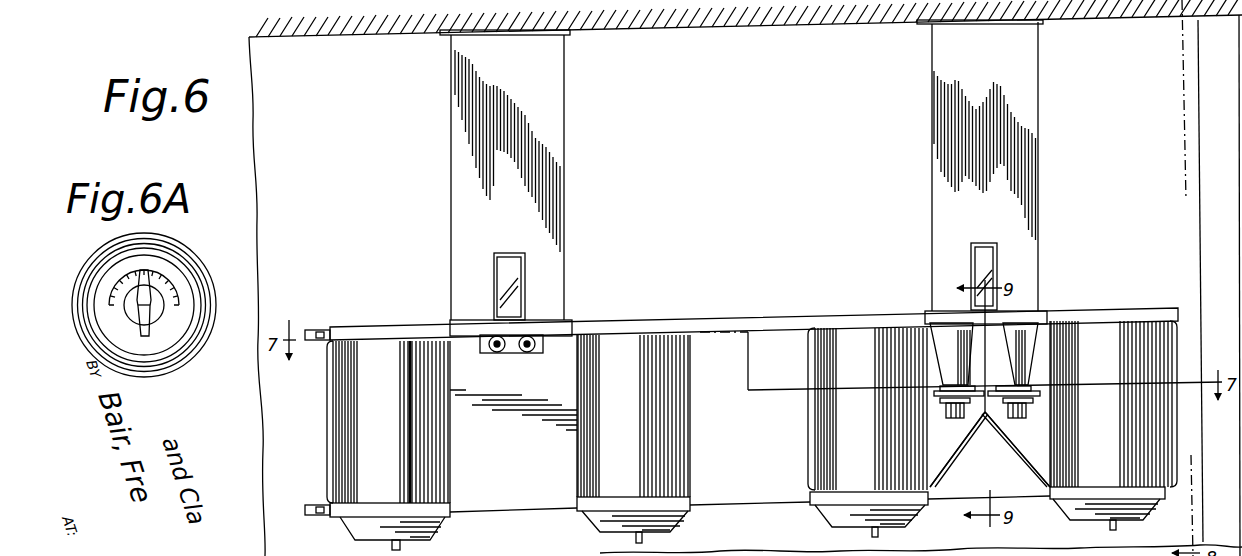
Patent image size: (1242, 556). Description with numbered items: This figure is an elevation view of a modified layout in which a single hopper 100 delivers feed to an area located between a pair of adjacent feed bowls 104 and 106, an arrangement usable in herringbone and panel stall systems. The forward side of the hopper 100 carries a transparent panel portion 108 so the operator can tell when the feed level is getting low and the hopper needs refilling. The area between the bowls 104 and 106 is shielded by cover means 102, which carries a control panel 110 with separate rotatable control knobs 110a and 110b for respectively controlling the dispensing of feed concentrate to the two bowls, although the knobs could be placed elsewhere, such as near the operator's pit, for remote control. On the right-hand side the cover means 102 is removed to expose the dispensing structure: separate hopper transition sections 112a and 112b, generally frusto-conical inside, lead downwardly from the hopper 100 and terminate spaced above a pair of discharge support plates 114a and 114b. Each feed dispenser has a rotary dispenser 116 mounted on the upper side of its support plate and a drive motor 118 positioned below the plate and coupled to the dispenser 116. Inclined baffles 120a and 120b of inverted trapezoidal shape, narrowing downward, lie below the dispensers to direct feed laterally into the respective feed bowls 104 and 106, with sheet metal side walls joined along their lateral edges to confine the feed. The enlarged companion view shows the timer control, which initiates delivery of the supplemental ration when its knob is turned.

In FIG. 6, the hopper 100 is at (568, 200).
In FIG. 6, the cover means 102 is at (530, 436).
In FIG. 6, the feed bowl 104 is at (360, 532).
In FIG. 6, the feed bowl 106 is at (598, 525).
In FIG. 6, the transparent panel portion 108 is at (510, 284).
In FIG. 6A, the control panel 110 is at (160, 267).
In FIG. 6, the control knob 110a is at (497, 353).
In FIG. 6, the control knob 110b is at (528, 353).
In FIG. 6, the hopper transition section 112a is at (947, 330).
In FIG. 6, the hopper transition section 112b is at (1022, 330).
In FIG. 6, the discharge support plate 114a is at (957, 418).
In FIG. 6, the discharge support plate 114b is at (1013, 418).
In FIG. 6, the rotary dispenser 116 is at (1005, 388).
In FIG. 6, the drive motor 118 is at (990, 449).
In FIG. 6, the inclined baffle 120a is at (945, 468).
In FIG. 6, the inclined baffle 120b is at (1034, 470).